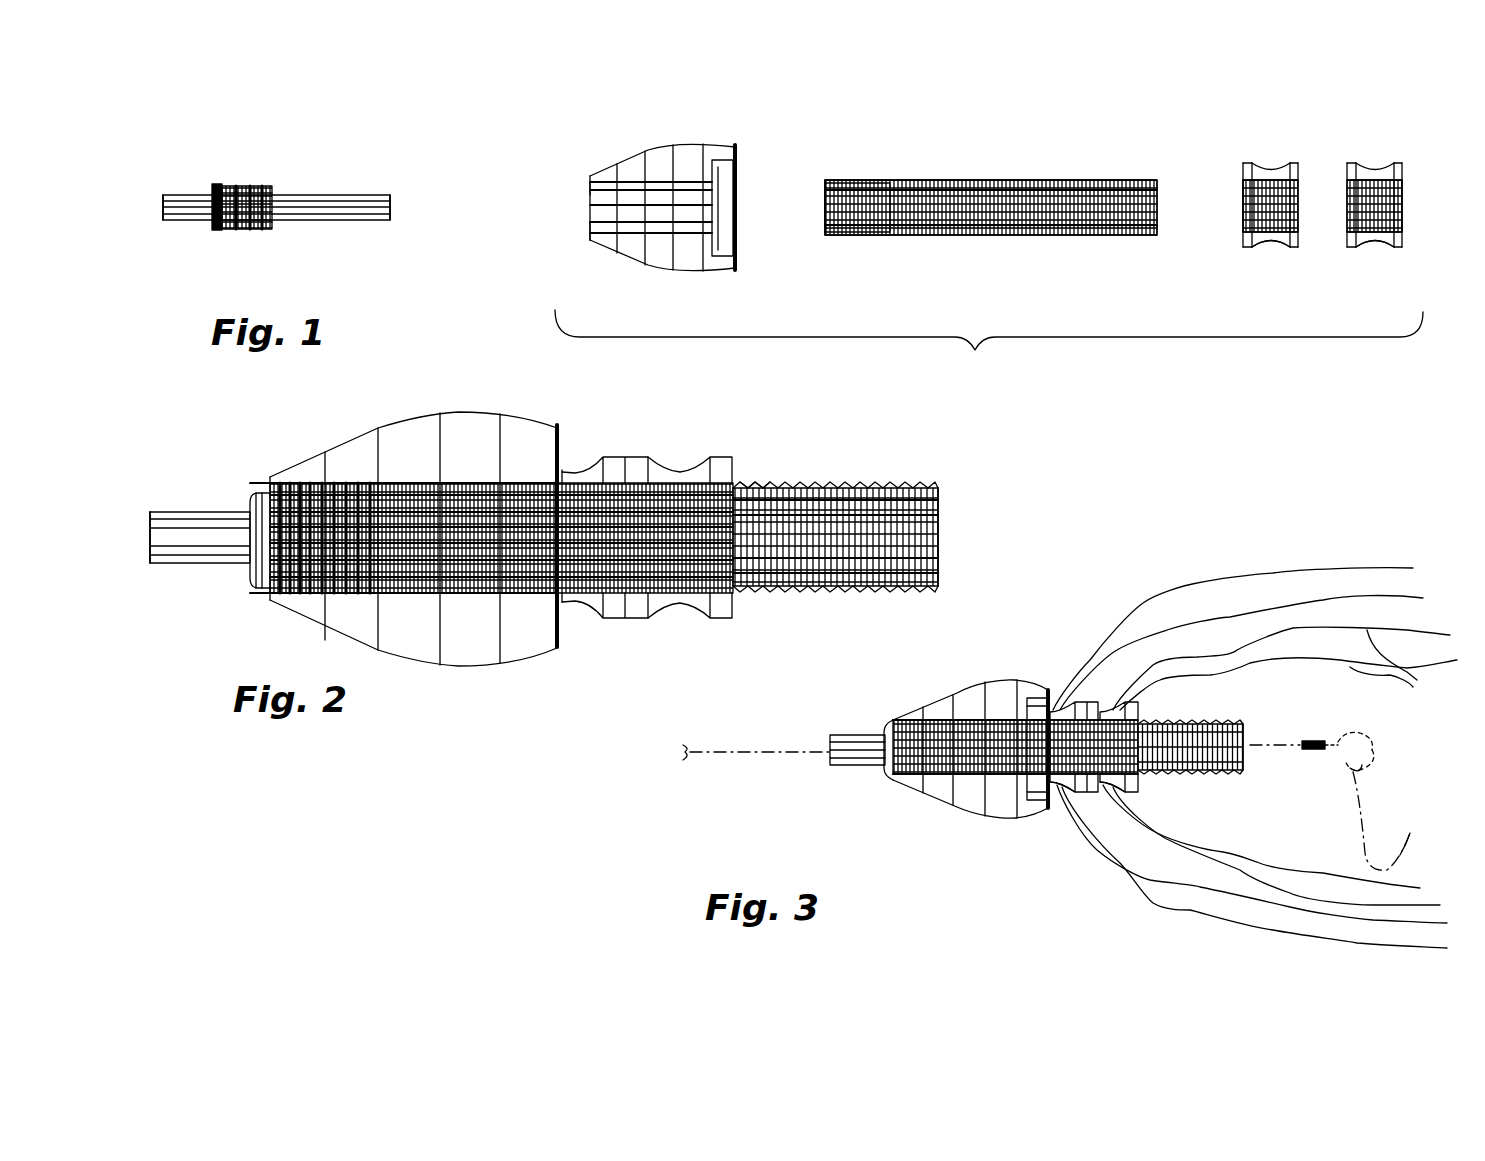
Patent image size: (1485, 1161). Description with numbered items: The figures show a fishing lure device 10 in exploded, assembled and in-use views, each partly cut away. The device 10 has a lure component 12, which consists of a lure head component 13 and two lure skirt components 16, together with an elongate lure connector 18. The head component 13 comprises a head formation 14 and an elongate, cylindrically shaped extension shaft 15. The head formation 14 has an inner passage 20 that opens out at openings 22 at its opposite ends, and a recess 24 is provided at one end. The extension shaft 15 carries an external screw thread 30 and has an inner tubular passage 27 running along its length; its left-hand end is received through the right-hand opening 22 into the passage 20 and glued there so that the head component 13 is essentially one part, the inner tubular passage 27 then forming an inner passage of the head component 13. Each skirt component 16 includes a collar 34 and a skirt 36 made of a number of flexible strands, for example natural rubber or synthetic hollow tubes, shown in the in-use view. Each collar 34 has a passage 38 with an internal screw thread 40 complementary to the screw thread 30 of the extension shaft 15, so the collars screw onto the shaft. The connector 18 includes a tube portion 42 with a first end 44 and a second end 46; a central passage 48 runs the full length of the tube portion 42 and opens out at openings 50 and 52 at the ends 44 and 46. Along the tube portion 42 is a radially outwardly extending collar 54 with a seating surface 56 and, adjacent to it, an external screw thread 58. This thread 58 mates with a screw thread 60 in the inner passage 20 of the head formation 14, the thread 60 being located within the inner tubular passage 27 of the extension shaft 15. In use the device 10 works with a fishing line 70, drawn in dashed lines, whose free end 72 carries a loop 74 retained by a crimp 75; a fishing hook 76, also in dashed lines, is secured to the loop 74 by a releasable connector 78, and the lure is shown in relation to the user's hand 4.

In FIG. 3, the patient tissue 4 is at (1398, 835).
In FIG. 1, the fishing lure device 10 is at (478, 102).
In FIG. 1, the lure component 12 is at (975, 350).
In FIG. 1, the lure head component 13 is at (752, 133).
In FIG. 1, the head formation 14 is at (655, 143).
In FIG. 2, the head formation 14 is at (347, 433).
In FIG. 3, the head formation 14 is at (940, 695).
In FIG. 1, the extension shaft 15 is at (955, 178).
In FIG. 2, the extension shaft 15 is at (770, 452).
In FIG. 3, the extension shaft 15 is at (1190, 747).
In FIG. 1, the lure skirt component 16 is at (1268, 161).
In FIG. 3, the lure skirt component 16 is at (1060, 707).
In FIG. 1, the lure connector 18 is at (193, 160).
In FIG. 3, the lure connector 18 is at (848, 765).
In FIG. 1, the inner passage 20 is at (588, 222).
In FIG. 1, the opening 22 is at (588, 188).
In FIG. 1, the recess 24 is at (738, 228).
In FIG. 1, the inner tubular passage 27 is at (823, 207).
In FIG. 2, the inner tubular passage 27 is at (942, 524).
In FIG. 1, the external screw thread 30 is at (1036, 238).
In FIG. 2, the external screw thread 30 is at (842, 482).
In FIG. 1, the collar 34 is at (1265, 248).
In FIG. 3, the collar 34 is at (1058, 792).
In FIG. 3, the skirt 36 is at (1232, 617).
In FIG. 1, the passage 38 is at (1241, 205).
In FIG. 2, the internal screw thread 40 is at (676, 482).
In FIG. 1, the tube portion 42 is at (193, 225).
In FIG. 2, the tube portion 42 is at (200, 565).
In FIG. 1, the first end 44 is at (158, 200).
In FIG. 2, the first end 44 is at (150, 556).
In FIG. 1, the second end 46 is at (395, 200).
In FIG. 2, the central passage 48 is at (150, 532).
In FIG. 1, the opening 50 is at (163, 215).
In FIG. 1, the opening 52 is at (393, 215).
In FIG. 1, the collar 54 is at (222, 188).
In FIG. 1, the seating surface 56 is at (228, 232).
In FIG. 1, the external screw thread 58 is at (258, 232).
In FIG. 2, the screw thread 60 is at (316, 480).
In FIG. 3, the fishing line 70 is at (760, 748).
In FIG. 3, the free end 72 is at (1308, 736).
In FIG. 3, the loop 74 is at (1375, 738).
In FIG. 3, the crimp 75 is at (1324, 742).
In FIG. 3, the fishing hook 76 is at (1360, 810).
In FIG. 3, the releasable connector 78 is at (1364, 768).